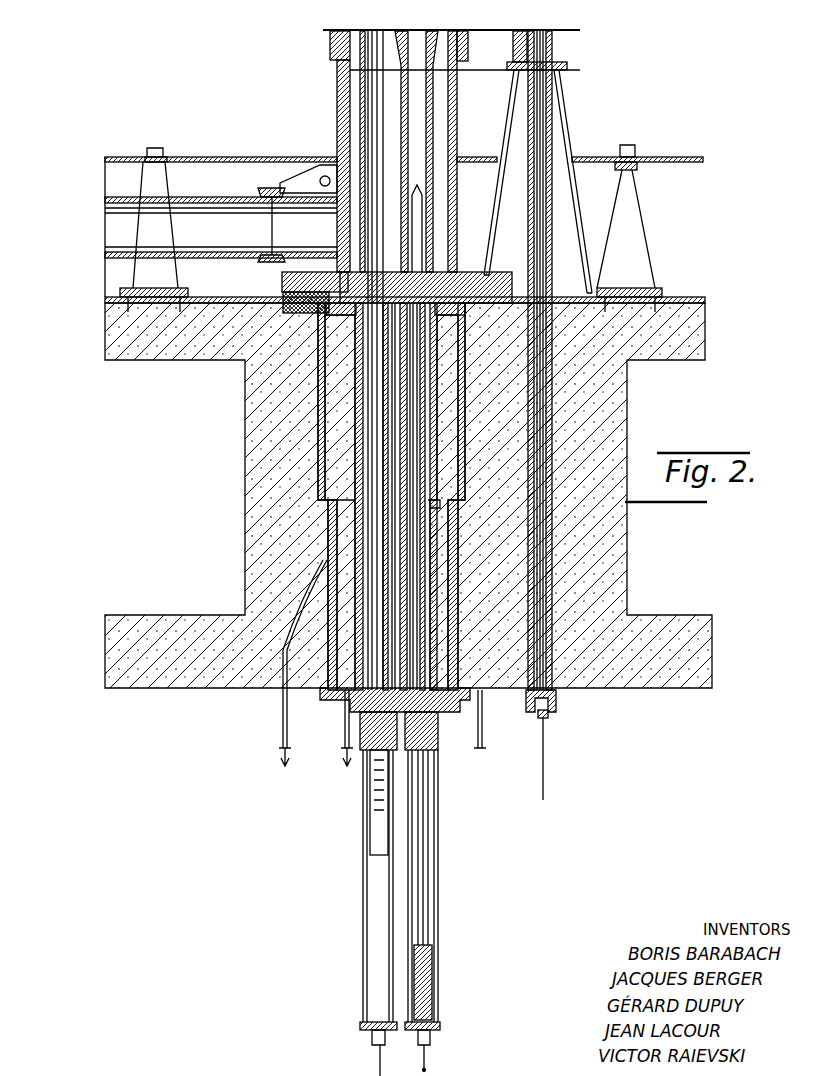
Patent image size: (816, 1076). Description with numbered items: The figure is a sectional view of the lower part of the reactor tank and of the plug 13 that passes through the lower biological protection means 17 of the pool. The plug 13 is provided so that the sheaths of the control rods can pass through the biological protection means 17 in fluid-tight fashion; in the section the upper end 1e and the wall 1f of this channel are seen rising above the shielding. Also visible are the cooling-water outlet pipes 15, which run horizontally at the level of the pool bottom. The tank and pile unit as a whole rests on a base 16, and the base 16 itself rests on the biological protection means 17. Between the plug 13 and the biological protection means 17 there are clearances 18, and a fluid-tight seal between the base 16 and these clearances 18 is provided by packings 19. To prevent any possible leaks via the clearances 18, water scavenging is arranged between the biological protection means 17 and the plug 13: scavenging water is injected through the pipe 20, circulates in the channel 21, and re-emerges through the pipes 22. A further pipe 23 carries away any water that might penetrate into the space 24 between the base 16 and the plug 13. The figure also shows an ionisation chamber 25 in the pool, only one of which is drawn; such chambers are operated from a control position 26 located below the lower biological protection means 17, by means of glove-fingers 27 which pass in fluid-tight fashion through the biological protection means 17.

The upper end of channel 1e is at (345, 30).
The channel tube wall 1f is at (337, 104).
The plug 13 is at (458, 412).
The cooling-water outlet pipes 15 is at (207, 240).
The base 16 is at (282, 283).
The lower biological protection means 17 is at (280, 460).
The clearances 18 is at (465, 378).
The packings 19 is at (322, 302).
The pipe 20 is at (450, 750).
The channel 21 is at (456, 522).
The pipes 22 is at (282, 730).
The pipe 23 is at (347, 733).
The space 24 is at (345, 316).
The ionisation chamber 25 is at (515, 42).
The control position 26 is at (575, 712).
The glove-fingers 27 is at (552, 281).